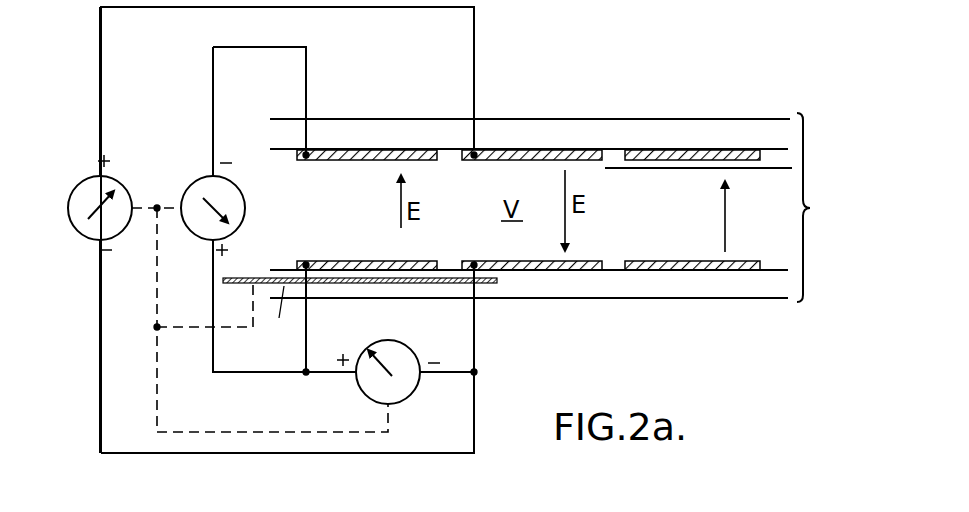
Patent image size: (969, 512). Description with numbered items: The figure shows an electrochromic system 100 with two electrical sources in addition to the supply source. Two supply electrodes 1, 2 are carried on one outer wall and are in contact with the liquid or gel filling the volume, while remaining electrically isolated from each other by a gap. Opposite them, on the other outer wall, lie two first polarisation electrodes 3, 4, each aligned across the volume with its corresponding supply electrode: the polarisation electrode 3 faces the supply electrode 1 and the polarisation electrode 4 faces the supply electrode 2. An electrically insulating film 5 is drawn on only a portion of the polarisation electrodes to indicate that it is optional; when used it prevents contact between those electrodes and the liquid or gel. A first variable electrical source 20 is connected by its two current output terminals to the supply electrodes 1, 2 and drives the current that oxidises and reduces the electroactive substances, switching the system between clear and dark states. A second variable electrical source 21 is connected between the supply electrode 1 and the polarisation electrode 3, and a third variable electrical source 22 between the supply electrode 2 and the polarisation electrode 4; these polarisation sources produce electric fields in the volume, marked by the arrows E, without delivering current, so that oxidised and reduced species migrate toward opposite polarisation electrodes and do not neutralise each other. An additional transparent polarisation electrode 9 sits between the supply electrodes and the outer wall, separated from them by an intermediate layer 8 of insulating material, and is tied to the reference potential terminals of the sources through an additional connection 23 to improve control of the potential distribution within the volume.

The supply electrode 1 is at (388, 272).
The supply electrode 2 is at (540, 270).
The first polarisation electrode 3 is at (397, 154).
The first polarisation electrode 4 is at (553, 154).
The insulating film 5 is at (774, 152).
The intermediate layer 8 is at (283, 276).
The additional transparent polarisation electrode 9 is at (277, 318).
The first variable electrical source 20 is at (366, 396).
The second variable electrical source 21 is at (195, 180).
The third variable electrical source 22 is at (91, 178).
The additional connection 23 is at (186, 329).
The electrochromic system 100 is at (829, 207).